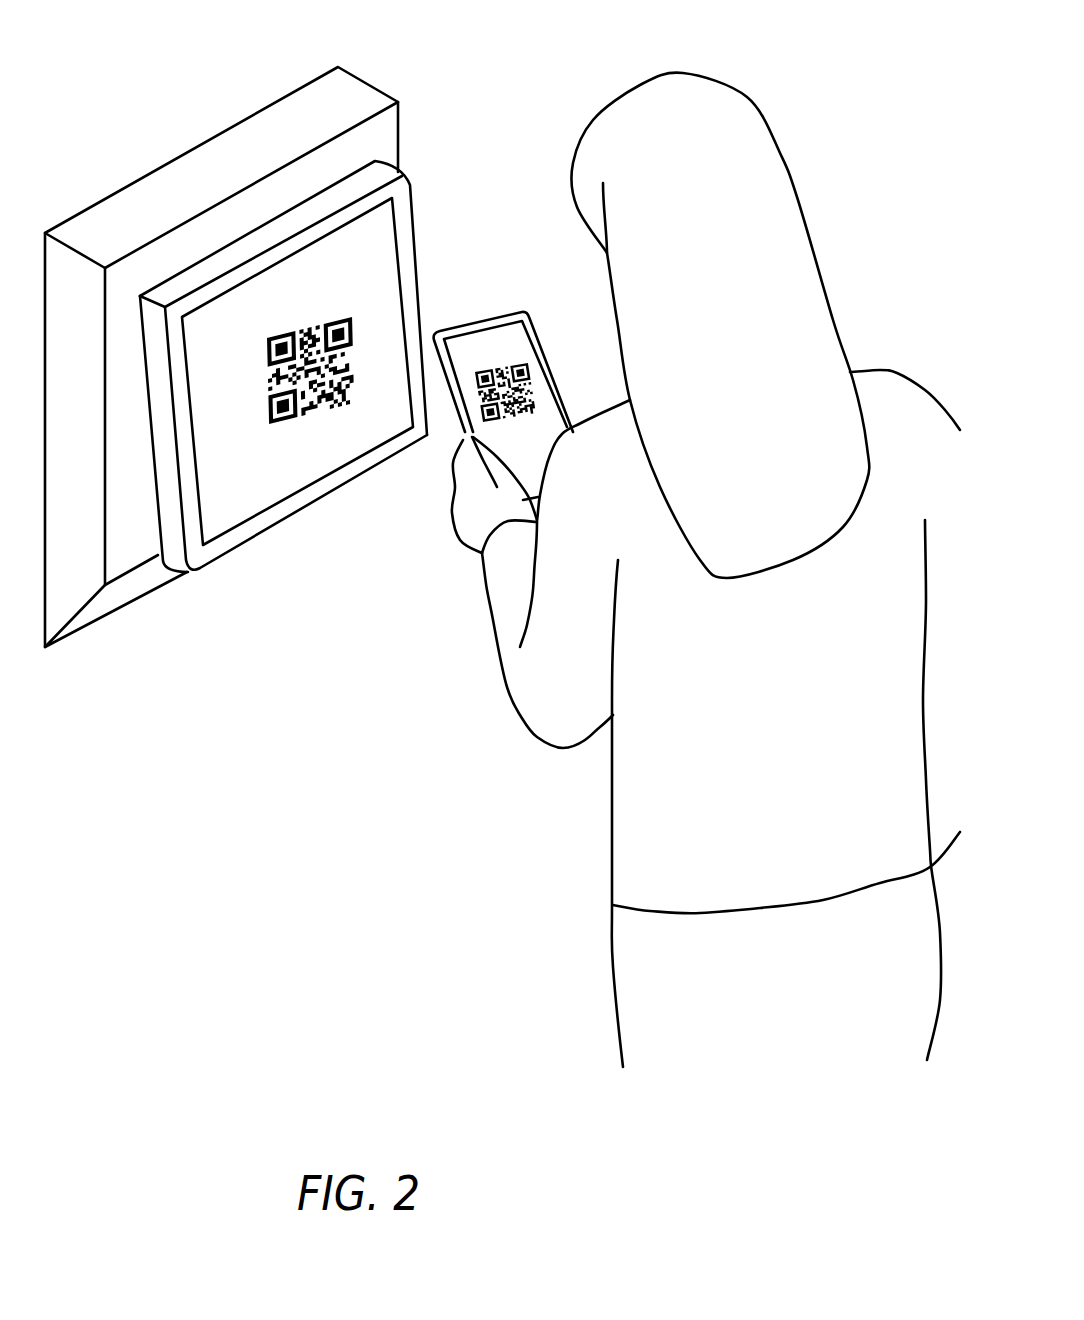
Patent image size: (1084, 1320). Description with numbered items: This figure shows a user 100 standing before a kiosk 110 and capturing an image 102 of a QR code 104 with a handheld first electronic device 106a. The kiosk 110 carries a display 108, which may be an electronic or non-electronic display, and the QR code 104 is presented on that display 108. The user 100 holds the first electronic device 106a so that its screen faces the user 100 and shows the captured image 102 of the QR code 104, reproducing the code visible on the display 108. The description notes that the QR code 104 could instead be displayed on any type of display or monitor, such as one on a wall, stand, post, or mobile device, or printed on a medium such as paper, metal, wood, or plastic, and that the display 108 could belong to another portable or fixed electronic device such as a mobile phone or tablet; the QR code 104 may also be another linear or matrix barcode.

The user 100 is at (797, 197).
The image 102 is at (527, 383).
The QR code 104 is at (303, 413).
The first electronic device 106a is at (482, 318).
The display 108 is at (397, 227).
The kiosk 110 is at (202, 168).